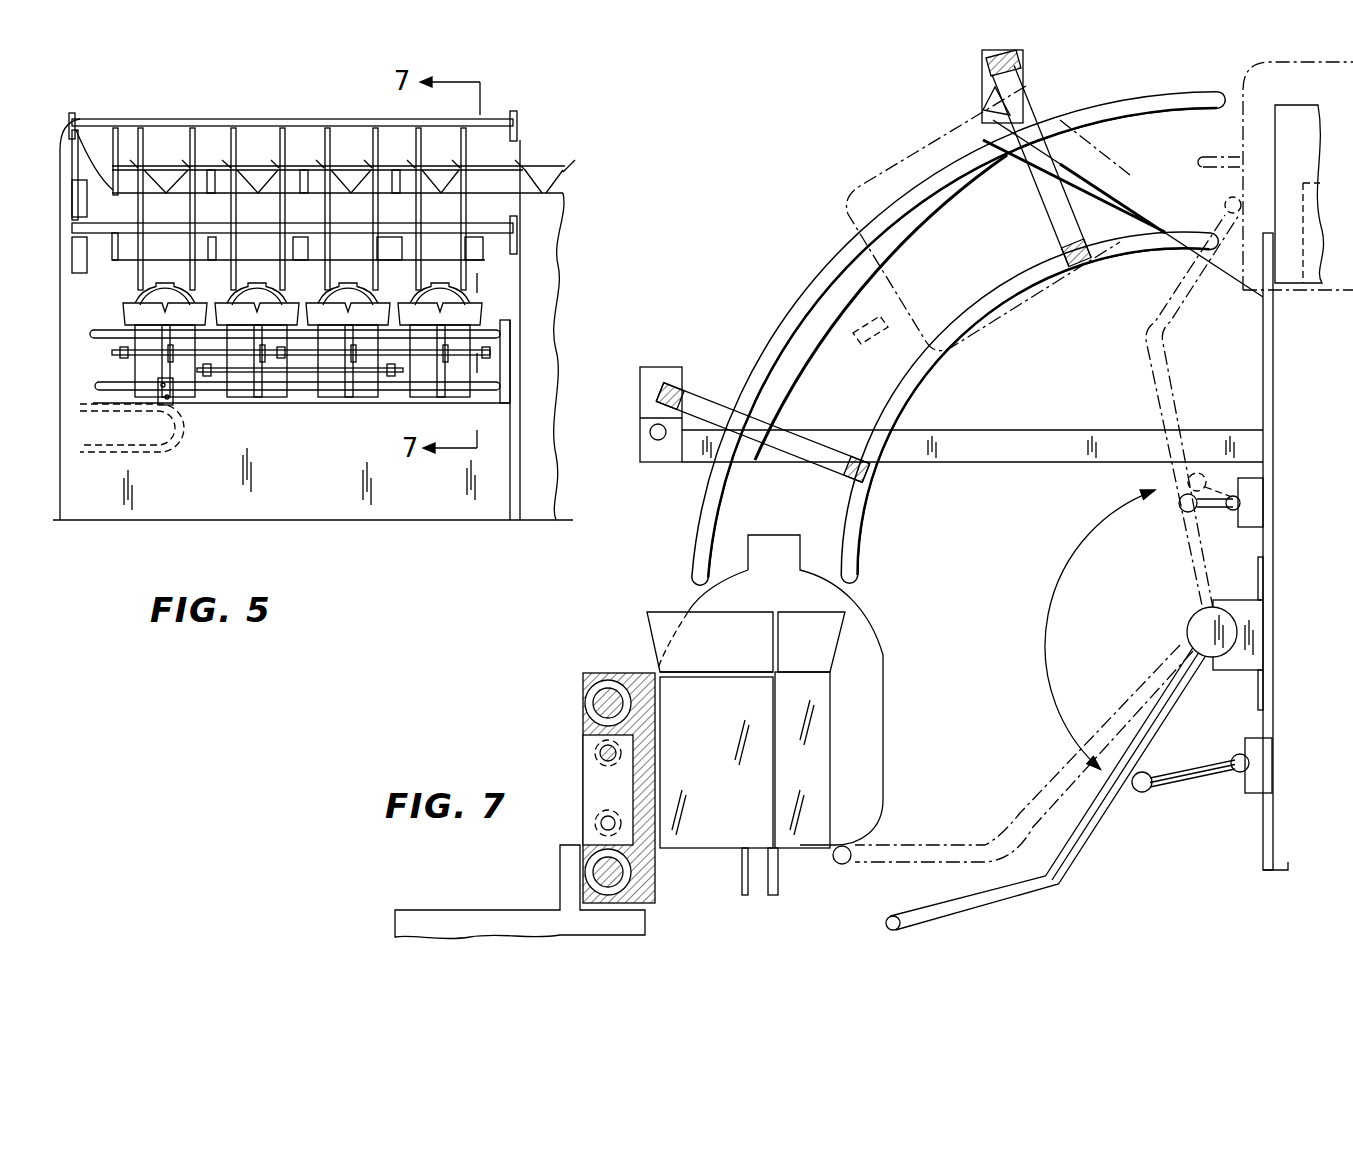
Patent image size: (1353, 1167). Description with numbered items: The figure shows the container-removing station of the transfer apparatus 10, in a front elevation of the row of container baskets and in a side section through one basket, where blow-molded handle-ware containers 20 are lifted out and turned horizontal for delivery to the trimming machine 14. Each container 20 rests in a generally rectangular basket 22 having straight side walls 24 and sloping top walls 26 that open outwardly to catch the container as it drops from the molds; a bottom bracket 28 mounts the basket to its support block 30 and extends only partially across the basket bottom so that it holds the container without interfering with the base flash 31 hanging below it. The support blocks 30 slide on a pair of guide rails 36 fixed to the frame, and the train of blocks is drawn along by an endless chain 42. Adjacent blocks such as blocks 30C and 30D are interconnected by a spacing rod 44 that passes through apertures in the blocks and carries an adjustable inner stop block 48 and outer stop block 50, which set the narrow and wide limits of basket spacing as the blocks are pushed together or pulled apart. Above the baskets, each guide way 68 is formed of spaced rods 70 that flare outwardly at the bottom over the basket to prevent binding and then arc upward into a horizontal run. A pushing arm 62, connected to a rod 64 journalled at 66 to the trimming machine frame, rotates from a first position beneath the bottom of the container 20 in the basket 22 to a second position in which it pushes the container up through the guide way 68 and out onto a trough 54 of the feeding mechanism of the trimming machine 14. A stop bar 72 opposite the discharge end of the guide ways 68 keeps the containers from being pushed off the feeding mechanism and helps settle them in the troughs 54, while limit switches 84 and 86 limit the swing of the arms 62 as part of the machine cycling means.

In FIG. 5, the transfer apparatus 10 is at (312, 500).
In FIG. 7, the transfer apparatus 10 is at (515, 905).
In FIG. 5, the trimming machine 14 is at (538, 272).
In FIG. 5, the handle-ware container 20 is at (256, 297).
In FIG. 7, the handle-ware container 20 is at (1262, 62).
In FIG. 5, the basket 22 is at (128, 309).
In FIG. 7, the basket 22 is at (814, 726).
In FIG. 7, the side wall 24 is at (693, 792).
In FIG. 7, the top wall 26 is at (697, 660).
In FIG. 7, the bottom bracket 28 is at (742, 870).
In FIG. 5, the basket support block 30 is at (126, 330).
In FIG. 7, the basket support block 30 is at (640, 672).
In FIG. 5, the support block 30C is at (347, 397).
In FIG. 5, the support block 30D is at (463, 397).
In FIG. 7, the base flash 31 is at (778, 882).
In FIG. 7, the guide rail 36 is at (590, 703).
In FIG. 5, the endless chain 42 is at (170, 451).
In FIG. 5, the rod 44 is at (298, 378).
In FIG. 5, the inner stop block 48 is at (446, 347).
In FIG. 5, the outer stop block 50 is at (505, 385).
In FIG. 7, the trough 54 is at (1304, 198).
In FIG. 7, the arm 62 is at (1172, 380).
In FIG. 7, the rod 64 is at (1200, 628).
In FIG. 7, the journal 66 is at (1262, 616).
In FIG. 5, the guide way 68 is at (358, 222).
In FIG. 7, the guide way 68 is at (812, 278).
In FIG. 7, the rod 70 is at (880, 420).
In FIG. 5, the bar 72 is at (532, 168).
In FIG. 7, the limit switch 84 is at (1200, 786).
In FIG. 7, the limit switch 86 is at (1236, 522).